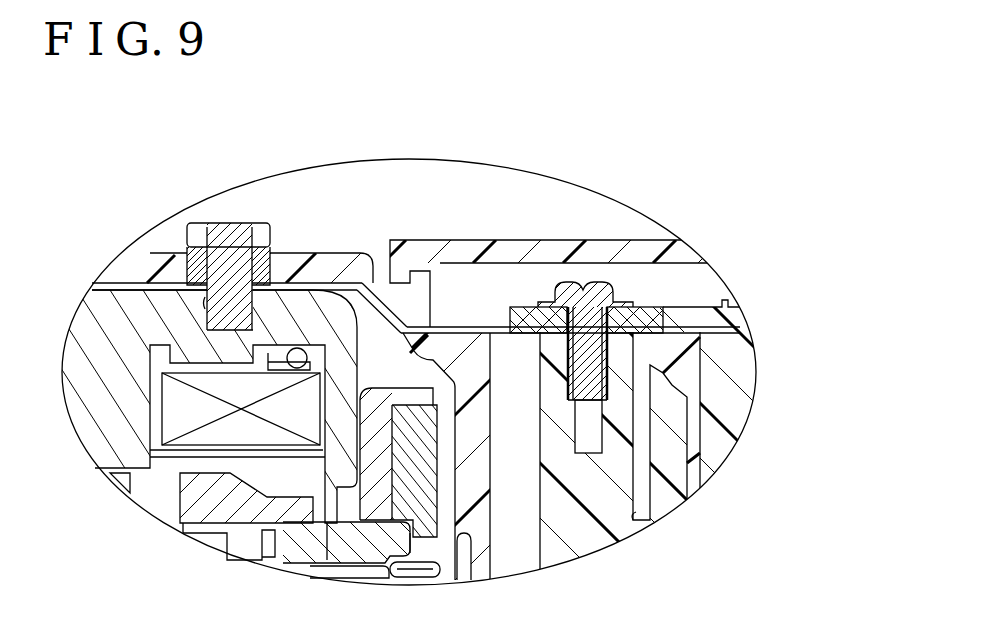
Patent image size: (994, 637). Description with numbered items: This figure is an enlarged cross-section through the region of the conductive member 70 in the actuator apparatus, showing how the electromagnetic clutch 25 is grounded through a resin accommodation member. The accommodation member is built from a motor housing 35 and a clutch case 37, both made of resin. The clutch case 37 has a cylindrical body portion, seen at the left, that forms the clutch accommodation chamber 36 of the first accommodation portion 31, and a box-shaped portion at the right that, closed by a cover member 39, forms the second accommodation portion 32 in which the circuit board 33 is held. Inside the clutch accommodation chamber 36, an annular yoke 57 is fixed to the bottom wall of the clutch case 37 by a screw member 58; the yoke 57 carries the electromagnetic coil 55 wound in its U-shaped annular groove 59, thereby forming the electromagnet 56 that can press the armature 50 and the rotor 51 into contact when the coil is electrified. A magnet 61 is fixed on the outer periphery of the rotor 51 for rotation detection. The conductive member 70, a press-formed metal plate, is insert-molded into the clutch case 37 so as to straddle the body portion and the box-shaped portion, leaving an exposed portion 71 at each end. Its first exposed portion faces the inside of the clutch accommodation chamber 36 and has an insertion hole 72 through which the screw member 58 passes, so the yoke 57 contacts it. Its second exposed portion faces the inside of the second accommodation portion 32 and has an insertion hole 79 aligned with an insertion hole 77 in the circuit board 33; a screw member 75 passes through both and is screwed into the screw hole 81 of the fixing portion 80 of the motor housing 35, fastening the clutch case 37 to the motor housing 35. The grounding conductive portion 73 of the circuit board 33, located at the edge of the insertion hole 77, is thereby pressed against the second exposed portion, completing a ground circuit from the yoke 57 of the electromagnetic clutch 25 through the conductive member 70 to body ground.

The electromagnetic clutch 25 is at (422, 551).
The first accommodation portion 31 is at (153, 251).
The second accommodation portion 32 is at (703, 464).
The circuit board 33 is at (725, 303).
The motor housing 35 is at (640, 520).
The clutch accommodation chamber 36 is at (372, 272).
The clutch case 37 is at (500, 574).
The cover member 39 is at (420, 240).
The armature 50 is at (383, 570).
The rotor 51 is at (257, 525).
The electromagnetic coil 55 is at (207, 475).
The electromagnet 56 is at (297, 484).
The yoke 57 is at (362, 283).
The screw member 58 is at (218, 222).
The annular groove 59 is at (157, 445).
The magnet 61 is at (438, 434).
The conductive member 70 is at (452, 327).
The exposed portion 71 is at (288, 283).
The insertion hole 72 is at (207, 304).
The grounding conductive portion 73 is at (647, 298).
The screw member 75 is at (556, 302).
The insertion hole 77 is at (592, 282).
The insertion hole 79 is at (562, 338).
The fixing portion 80 is at (630, 399).
The screw hole 81 is at (593, 438).